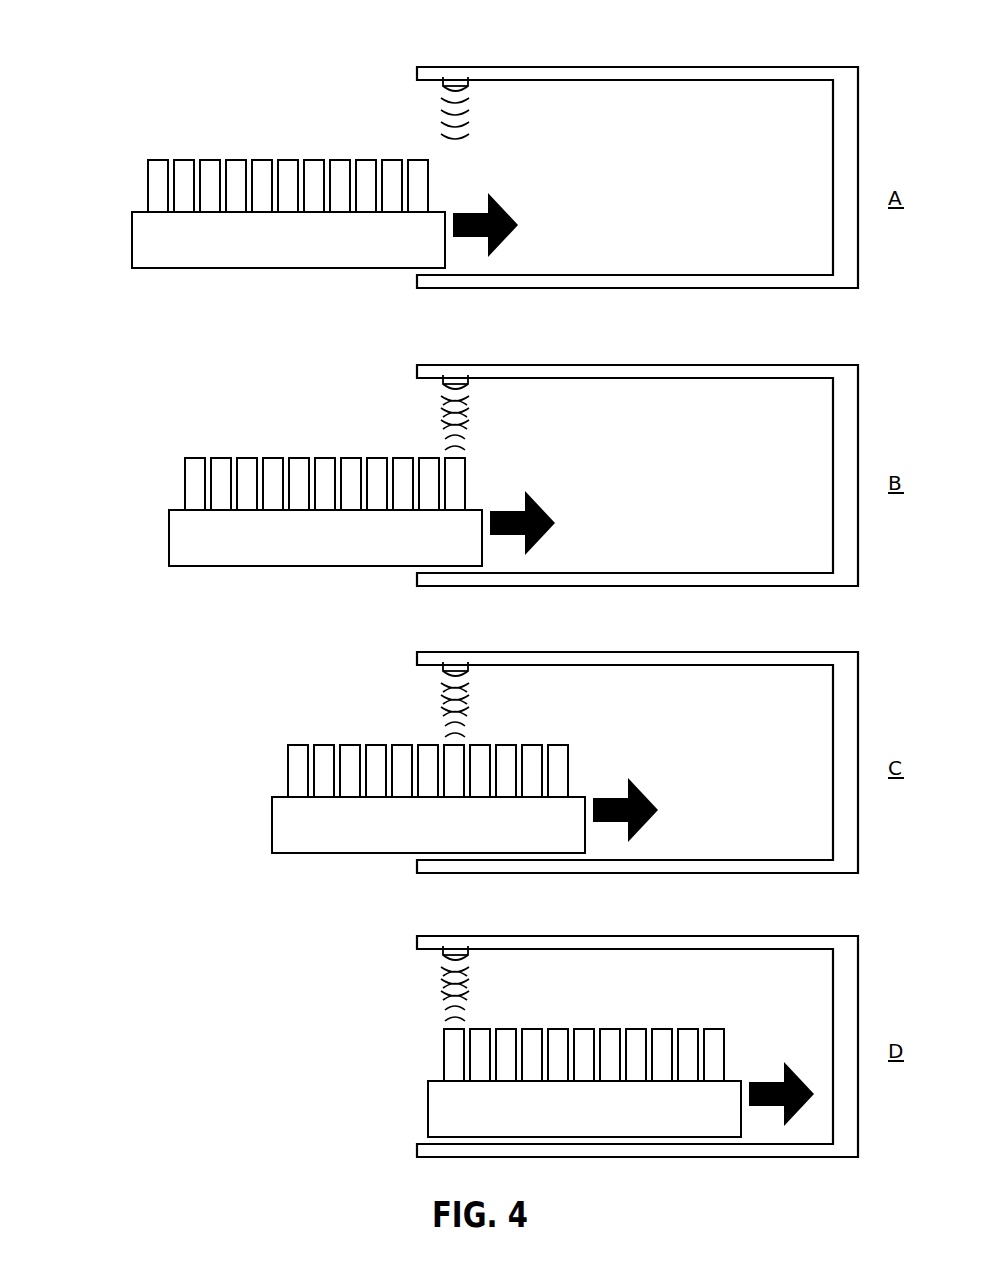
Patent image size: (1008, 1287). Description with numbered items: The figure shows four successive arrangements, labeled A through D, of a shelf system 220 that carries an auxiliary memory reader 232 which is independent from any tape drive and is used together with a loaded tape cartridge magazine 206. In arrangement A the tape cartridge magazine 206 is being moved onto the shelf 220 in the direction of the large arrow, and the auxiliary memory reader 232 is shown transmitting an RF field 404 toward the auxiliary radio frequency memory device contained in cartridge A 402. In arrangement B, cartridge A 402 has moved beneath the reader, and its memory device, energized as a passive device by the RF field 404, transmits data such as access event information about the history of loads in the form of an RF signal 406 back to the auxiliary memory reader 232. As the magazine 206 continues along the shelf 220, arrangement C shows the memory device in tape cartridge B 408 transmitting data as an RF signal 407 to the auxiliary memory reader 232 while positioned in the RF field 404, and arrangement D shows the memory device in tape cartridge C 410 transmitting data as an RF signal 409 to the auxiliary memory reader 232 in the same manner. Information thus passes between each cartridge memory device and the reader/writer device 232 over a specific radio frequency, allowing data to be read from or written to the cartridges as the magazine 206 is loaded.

The tape cartridge magazine 206 is at (132, 241).
The shelf system 220 is at (432, 290).
The auxiliary memory reader 232 is at (470, 82).
The cartridge A 402 is at (420, 160).
The RF field 404 is at (418, 101).
The RF signal 406 is at (430, 442).
The RF signal 407 is at (435, 728).
The tape cartridge B 408 is at (465, 777).
The RF signal 409 is at (433, 1010).
The tape cartridge C 410 is at (443, 1043).